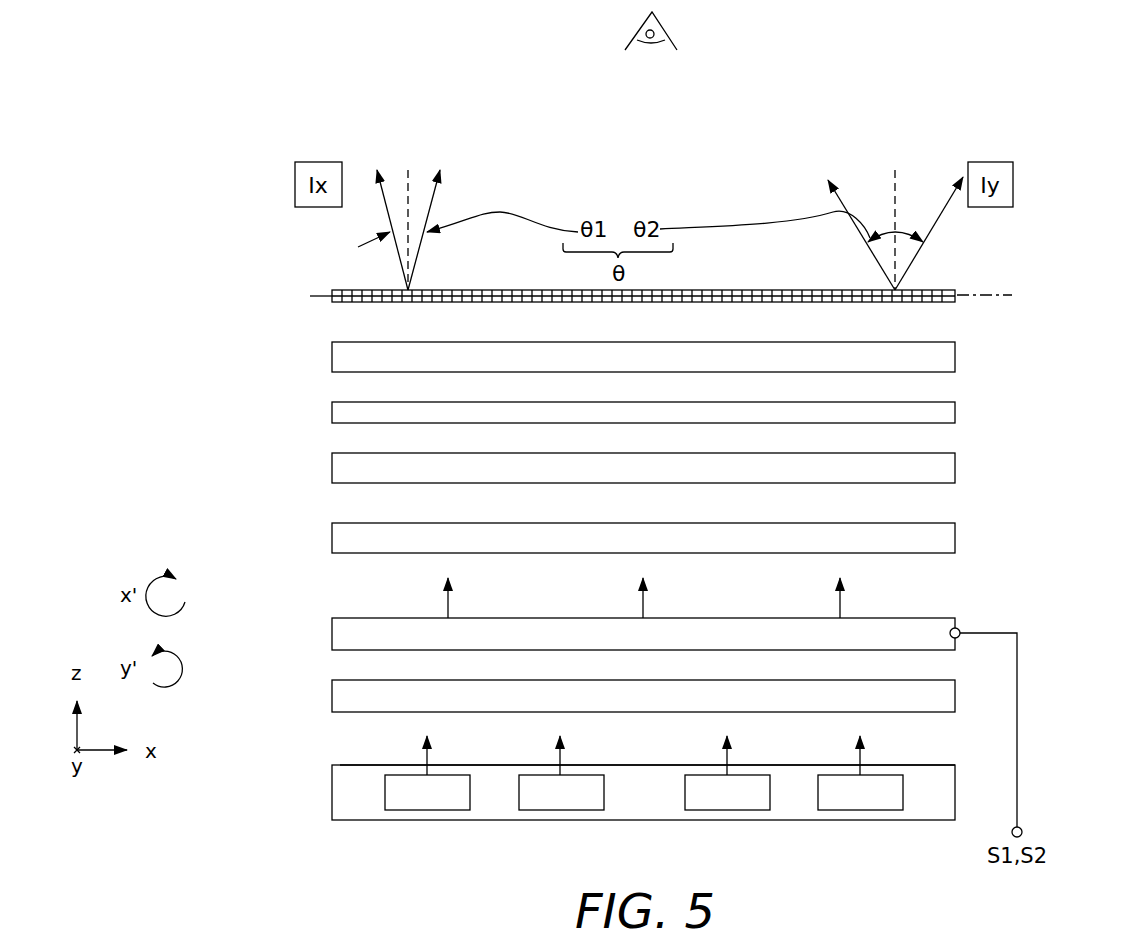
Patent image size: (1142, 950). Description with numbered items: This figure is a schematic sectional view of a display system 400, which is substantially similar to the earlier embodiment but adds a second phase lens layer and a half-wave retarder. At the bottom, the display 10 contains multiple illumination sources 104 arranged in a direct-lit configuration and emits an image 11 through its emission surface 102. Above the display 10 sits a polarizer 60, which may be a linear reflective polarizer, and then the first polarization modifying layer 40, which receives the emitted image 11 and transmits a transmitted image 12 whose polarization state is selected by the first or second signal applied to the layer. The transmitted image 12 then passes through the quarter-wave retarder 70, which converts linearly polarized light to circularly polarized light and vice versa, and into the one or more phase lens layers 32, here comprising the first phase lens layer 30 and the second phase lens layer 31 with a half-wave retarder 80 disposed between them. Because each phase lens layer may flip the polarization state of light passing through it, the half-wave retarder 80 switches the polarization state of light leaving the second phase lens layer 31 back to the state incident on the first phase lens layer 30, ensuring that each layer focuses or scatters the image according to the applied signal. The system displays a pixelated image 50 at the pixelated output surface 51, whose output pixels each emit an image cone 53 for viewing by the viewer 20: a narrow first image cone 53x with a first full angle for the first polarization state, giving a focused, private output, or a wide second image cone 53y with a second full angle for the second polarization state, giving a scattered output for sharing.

The display system 400 is at (182, 115).
The viewer 20 is at (675, 23).
The image cone 53 is at (680, 150).
The first image cone 53x is at (450, 208).
The second image cone 53y is at (817, 202).
The pixelated image 50 is at (353, 290).
The pixelated output surface 51 is at (1008, 295).
The phase lens layers 32 is at (588, 415).
The first phase lens layer 30 is at (347, 355).
The second phase lens layer 31 is at (347, 466).
The half-wave retarder 80 is at (938, 412).
The quarter-wave retarder 70 is at (347, 537).
The transmitted image 12 is at (446, 605).
The first polarization modifying layer 40 is at (350, 633).
The polarizer 60 is at (350, 695).
The image 11 is at (426, 760).
The emission surface 102 is at (345, 765).
The display 10 is at (350, 790).
The illumination source 104 is at (879, 805).